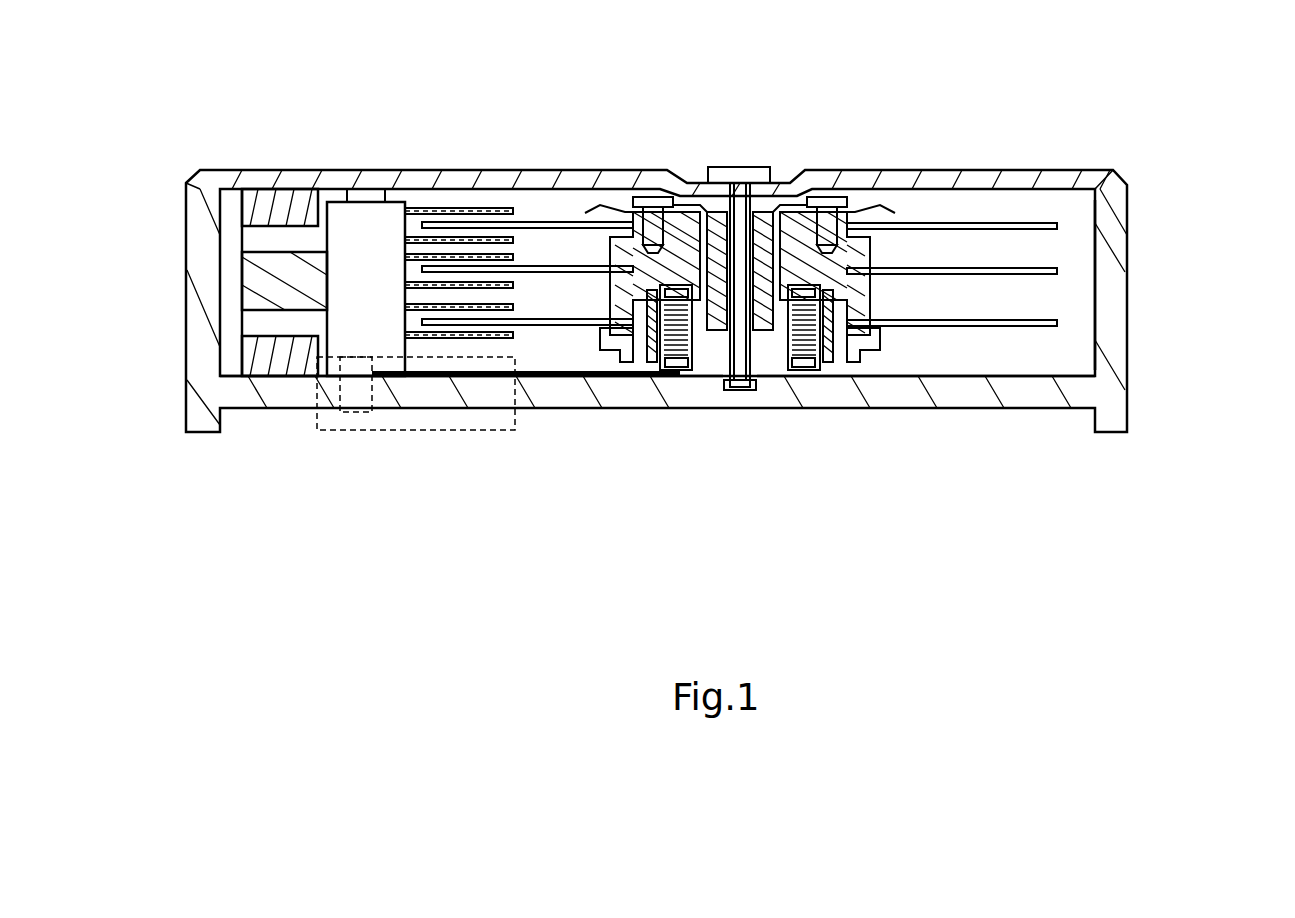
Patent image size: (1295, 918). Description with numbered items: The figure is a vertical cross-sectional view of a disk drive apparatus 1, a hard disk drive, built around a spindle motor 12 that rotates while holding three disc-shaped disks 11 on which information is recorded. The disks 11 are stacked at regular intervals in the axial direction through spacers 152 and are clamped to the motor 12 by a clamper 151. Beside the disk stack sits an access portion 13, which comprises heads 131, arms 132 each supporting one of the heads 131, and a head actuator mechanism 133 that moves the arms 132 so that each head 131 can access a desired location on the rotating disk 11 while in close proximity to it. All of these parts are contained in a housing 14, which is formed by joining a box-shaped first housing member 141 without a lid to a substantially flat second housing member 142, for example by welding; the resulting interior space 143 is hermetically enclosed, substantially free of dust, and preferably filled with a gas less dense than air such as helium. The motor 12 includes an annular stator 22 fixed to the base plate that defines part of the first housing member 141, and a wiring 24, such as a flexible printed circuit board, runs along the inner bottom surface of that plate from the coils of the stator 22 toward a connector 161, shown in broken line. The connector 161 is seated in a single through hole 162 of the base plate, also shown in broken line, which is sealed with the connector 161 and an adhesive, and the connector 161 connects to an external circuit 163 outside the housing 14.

The disk drive apparatus 1 is at (160, 133).
The disks 11 is at (942, 223).
The spindle motor 12 is at (795, 420).
The access portion 13 is at (563, 527).
The housing 14 is at (1205, 137).
The stator 22 is at (679, 372).
The wiring 24 is at (620, 378).
The heads 131 is at (507, 210).
The arms 132 is at (427, 207).
The head actuator mechanism 133 is at (372, 243).
The first housing member 141 is at (1112, 268).
The second housing member 142 is at (1062, 187).
The interior space 143 is at (1085, 330).
The clamper 151 is at (635, 197).
The spacers 152 is at (858, 250).
The connector 161 is at (360, 412).
The through hole 162 is at (342, 343).
The external circuit 163 is at (430, 435).